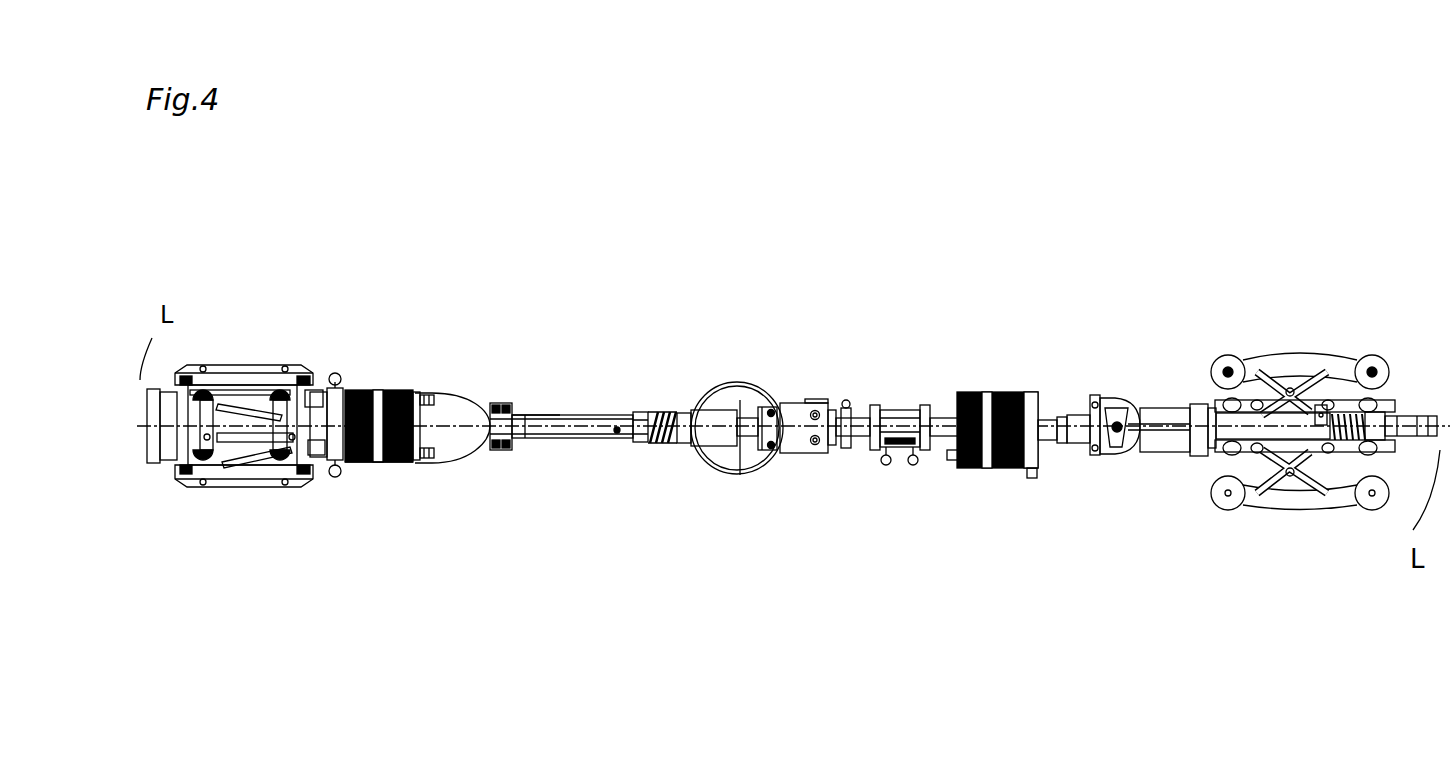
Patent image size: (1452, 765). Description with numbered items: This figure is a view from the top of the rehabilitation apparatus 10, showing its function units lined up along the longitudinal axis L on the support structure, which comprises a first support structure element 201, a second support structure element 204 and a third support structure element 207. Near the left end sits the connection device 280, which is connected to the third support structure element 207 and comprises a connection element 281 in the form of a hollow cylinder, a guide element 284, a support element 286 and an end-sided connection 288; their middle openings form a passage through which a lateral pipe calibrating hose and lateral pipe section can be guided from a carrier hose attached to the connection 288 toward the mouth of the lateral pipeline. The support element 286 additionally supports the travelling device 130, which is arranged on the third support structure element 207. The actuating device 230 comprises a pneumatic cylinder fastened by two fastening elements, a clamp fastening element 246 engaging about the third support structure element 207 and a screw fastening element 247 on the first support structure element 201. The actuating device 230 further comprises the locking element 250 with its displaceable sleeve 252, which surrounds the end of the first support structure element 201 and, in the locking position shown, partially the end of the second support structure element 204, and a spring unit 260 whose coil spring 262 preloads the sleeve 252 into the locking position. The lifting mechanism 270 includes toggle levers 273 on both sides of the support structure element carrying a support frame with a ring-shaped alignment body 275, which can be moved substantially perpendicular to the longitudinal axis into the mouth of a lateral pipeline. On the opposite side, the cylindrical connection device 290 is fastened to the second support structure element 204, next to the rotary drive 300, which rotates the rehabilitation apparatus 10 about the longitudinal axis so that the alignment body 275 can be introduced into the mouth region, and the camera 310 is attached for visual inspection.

The carriage/trolley 10 is at (1303, 528).
The travelling device 130 is at (241, 496).
The first support structure element 201 is at (636, 415).
The second support structure element 204 is at (747, 420).
The third support structure element 207 is at (537, 420).
The actuating device 230 is at (593, 582).
The fastening element 246 is at (499, 452).
The fastening element 247 is at (617, 433).
The locking element 250 is at (687, 410).
The sleeve 252 is at (737, 430).
The spring unit 260 is at (670, 448).
The spring 262 is at (660, 410).
The lifting mechanism 270 is at (828, 503).
The toggle lever 273 is at (800, 403).
The alignment body 275 is at (760, 455).
The connection device 280 is at (392, 312).
The connection element 281 is at (362, 458).
The guide element 284 is at (460, 462).
The support element 286 is at (311, 455).
The connection 288 is at (165, 458).
The connection device 290 is at (978, 385).
The rotary drive 300 is at (1142, 463).
The camera 310 is at (1076, 408).